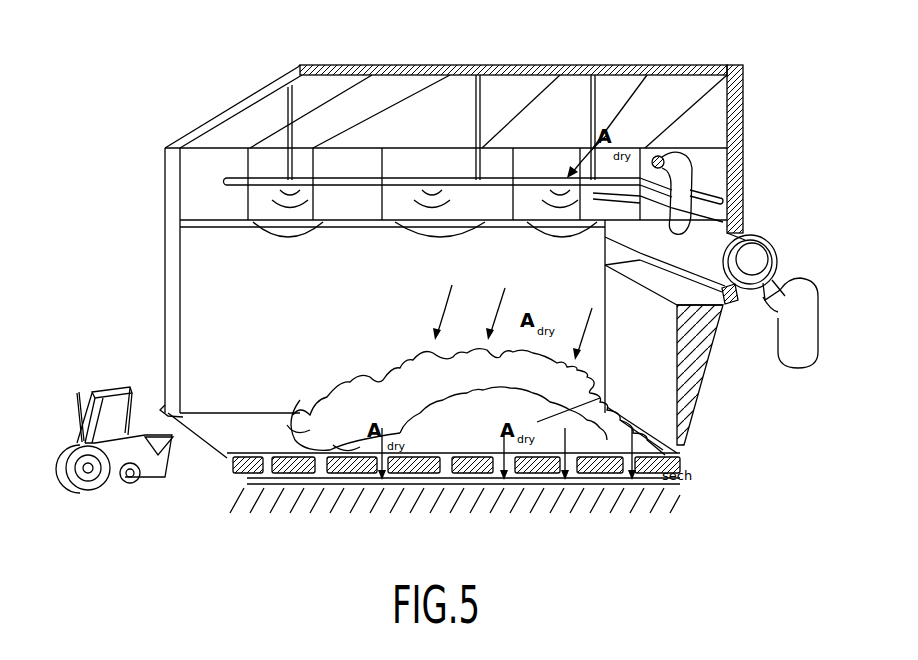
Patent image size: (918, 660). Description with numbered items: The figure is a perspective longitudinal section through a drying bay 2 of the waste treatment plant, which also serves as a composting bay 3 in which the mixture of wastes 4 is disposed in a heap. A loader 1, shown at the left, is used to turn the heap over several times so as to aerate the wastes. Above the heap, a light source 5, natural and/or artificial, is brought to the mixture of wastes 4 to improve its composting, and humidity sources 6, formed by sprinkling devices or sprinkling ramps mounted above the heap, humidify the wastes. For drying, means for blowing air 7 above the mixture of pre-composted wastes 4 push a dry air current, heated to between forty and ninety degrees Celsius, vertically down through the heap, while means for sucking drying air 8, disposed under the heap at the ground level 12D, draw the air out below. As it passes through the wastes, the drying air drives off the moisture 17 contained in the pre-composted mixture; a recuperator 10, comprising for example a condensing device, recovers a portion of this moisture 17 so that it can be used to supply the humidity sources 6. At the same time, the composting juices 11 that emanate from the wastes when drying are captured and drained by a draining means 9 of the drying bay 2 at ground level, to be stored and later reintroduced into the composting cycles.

The loader 1 is at (107, 488).
The drying bay 2 is at (147, 247).
The composting bay 3 is at (147, 317).
The mixture of wastes 4 is at (682, 454).
The light source 5 is at (363, 145).
The humidity sources 6 is at (282, 178).
The means for blowing air 7 is at (658, 160).
The means for sucking drying air 8 is at (558, 482).
The draining means 9 is at (343, 490).
The recuperator 10 is at (800, 305).
The composting juices 11 is at (280, 488).
The ground level 12D is at (218, 442).
The moisture 17 is at (760, 234).